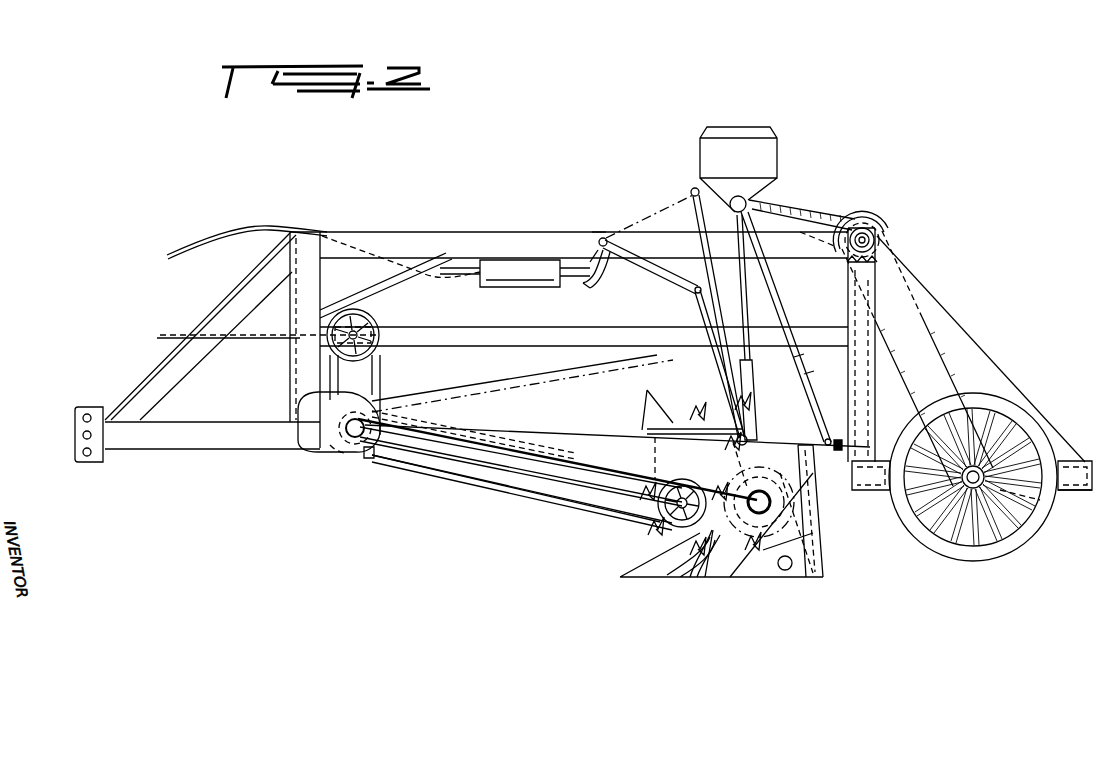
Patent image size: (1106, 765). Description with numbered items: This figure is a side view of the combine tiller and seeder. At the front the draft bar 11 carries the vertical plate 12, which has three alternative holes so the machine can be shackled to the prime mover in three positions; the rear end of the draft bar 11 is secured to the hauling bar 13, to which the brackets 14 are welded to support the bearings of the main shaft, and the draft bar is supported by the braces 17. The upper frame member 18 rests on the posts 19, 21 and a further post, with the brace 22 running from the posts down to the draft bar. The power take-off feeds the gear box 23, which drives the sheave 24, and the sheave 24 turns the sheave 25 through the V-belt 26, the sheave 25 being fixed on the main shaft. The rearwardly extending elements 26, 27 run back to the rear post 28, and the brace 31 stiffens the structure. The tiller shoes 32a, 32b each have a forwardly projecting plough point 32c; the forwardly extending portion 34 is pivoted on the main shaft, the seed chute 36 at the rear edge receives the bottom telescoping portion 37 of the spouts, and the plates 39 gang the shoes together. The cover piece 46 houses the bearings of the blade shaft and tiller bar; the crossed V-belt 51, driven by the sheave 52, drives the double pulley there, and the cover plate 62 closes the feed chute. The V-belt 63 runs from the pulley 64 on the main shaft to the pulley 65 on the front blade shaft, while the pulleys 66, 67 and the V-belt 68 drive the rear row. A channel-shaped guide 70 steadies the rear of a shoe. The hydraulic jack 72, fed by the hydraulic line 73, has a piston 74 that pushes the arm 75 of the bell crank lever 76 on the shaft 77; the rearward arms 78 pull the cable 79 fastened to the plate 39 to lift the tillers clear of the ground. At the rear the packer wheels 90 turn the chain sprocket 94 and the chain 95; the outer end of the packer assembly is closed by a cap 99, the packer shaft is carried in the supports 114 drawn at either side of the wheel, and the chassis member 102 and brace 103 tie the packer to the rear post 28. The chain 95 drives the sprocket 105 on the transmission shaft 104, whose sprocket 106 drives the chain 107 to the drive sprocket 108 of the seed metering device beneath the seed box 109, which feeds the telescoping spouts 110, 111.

The draft bar 11 is at (185, 422).
The vertical plate 12 is at (92, 464).
The hauling bar 13 is at (322, 440).
The brackets 14 is at (305, 425).
The braces 17 is at (185, 449).
The upper frame member 18 is at (322, 238).
The post 19 is at (298, 362).
The post 21 is at (265, 340).
The brace 22 is at (220, 299).
The gear box 23 is at (378, 316).
The sheave 24 is at (380, 355).
The sheave 25 is at (352, 405).
The V-belt 26 is at (383, 378).
The rearwardly extending element 27 is at (484, 232).
The rear post 28 is at (875, 294).
The brace 31 is at (576, 346).
The shoe 32a is at (787, 441).
The shoe 32b is at (667, 572).
The plough point 32c is at (620, 580).
The forwardly extending portion 34 is at (585, 397).
The seed chute 36 is at (835, 520).
The bottom telescoping portion 37 is at (758, 402).
The plates 39 is at (690, 435).
The cover piece 46 is at (780, 572).
The crossed V-belt 51 is at (595, 479).
The sheave 52 is at (340, 452).
The cover plate 62 is at (828, 492).
The V-belt 63 is at (490, 490).
The pulley 64 is at (372, 459).
The pulley 65 is at (648, 515).
The pulley 66 is at (655, 520).
The pulley 67 is at (830, 539).
The V-belt 68 is at (694, 579).
The channel-shaped guide 70 is at (846, 448).
The hydraulic jack 72 is at (523, 287).
The hydraulic line 73 is at (264, 229).
The piston 74 is at (585, 289).
The arm 75 is at (584, 276).
The bell crank lever 76 is at (600, 222).
The shaft 77 is at (606, 238).
The arms 78 is at (655, 270).
The cable 79 is at (705, 320).
The packer wheels 90 is at (977, 562).
The chain sprocket 94 is at (1044, 512).
The chain 95 is at (895, 378).
The cap 99 is at (960, 477).
The chassis member 102 is at (1078, 491).
The brace 103 is at (1004, 382).
The transmission shaft 104 is at (875, 230).
The chain sprocket 105 is at (895, 236).
The chain sprocket 106 is at (870, 213).
The chain 107 is at (800, 226).
The drive sprocket 108 is at (752, 200).
The seed box 109 is at (770, 148).
The telescoping spout 110 is at (725, 360).
The telescoping spout 111 is at (790, 300).
The axle bracket 114 is at (868, 461).